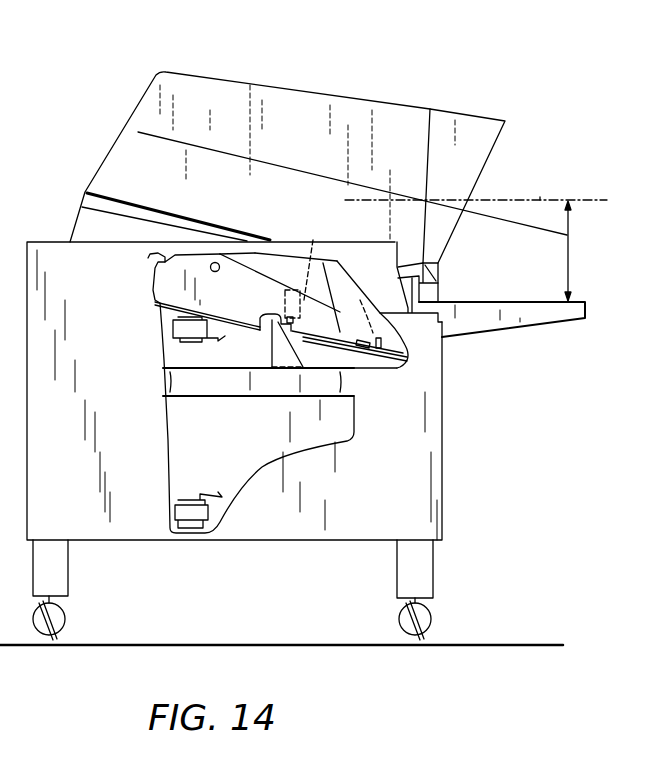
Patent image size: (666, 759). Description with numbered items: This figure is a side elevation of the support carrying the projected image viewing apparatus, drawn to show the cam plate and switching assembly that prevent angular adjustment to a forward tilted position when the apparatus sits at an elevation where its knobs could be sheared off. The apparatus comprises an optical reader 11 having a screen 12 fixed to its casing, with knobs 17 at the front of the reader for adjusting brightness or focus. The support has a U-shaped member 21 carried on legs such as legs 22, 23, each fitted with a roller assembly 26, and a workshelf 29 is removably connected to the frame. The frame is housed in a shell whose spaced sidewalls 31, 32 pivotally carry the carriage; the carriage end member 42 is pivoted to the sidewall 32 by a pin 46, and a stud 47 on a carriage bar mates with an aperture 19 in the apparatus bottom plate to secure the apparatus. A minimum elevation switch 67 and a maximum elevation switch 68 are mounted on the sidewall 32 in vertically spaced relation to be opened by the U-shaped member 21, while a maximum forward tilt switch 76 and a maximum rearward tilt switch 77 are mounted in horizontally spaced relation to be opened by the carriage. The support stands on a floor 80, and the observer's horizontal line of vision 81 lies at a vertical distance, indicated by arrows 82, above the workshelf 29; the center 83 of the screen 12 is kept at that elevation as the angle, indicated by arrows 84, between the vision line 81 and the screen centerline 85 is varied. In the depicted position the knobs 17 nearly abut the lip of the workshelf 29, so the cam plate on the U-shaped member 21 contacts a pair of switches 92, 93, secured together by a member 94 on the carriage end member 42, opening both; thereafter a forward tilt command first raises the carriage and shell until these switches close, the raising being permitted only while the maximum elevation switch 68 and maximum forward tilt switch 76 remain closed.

The optical reader 11 is at (268, 82).
The screen 12 is at (430, 127).
The knobs 17 is at (438, 271).
The aperture 19 is at (351, 363).
The U-shaped member 21 is at (232, 386).
The leg 22 is at (430, 577).
The leg 23 is at (60, 570).
The roller assembly 26 is at (60, 622).
The workshelf 29 is at (508, 301).
The sidewall 31 is at (90, 440).
The sidewall 32 is at (227, 465).
The carriage end member 42 is at (237, 300).
The pin 46 is at (216, 262).
The stud 47 is at (365, 314).
The minimum elevation switch 67 is at (173, 328).
The maximum elevation switch 68 is at (175, 515).
The maximum forward tilt switch 76 is at (165, 258).
The maximum rearward tilt switch 77 is at (270, 257).
The floor 80 is at (512, 645).
The line of vision 81 is at (597, 200).
The arrows 82 is at (570, 255).
The center 83 is at (426, 197).
The arrows 84 is at (541, 196).
The centerline 85 is at (482, 213).
The switch 92 is at (300, 237).
The switch 93 is at (329, 268).
The member 94 is at (272, 350).